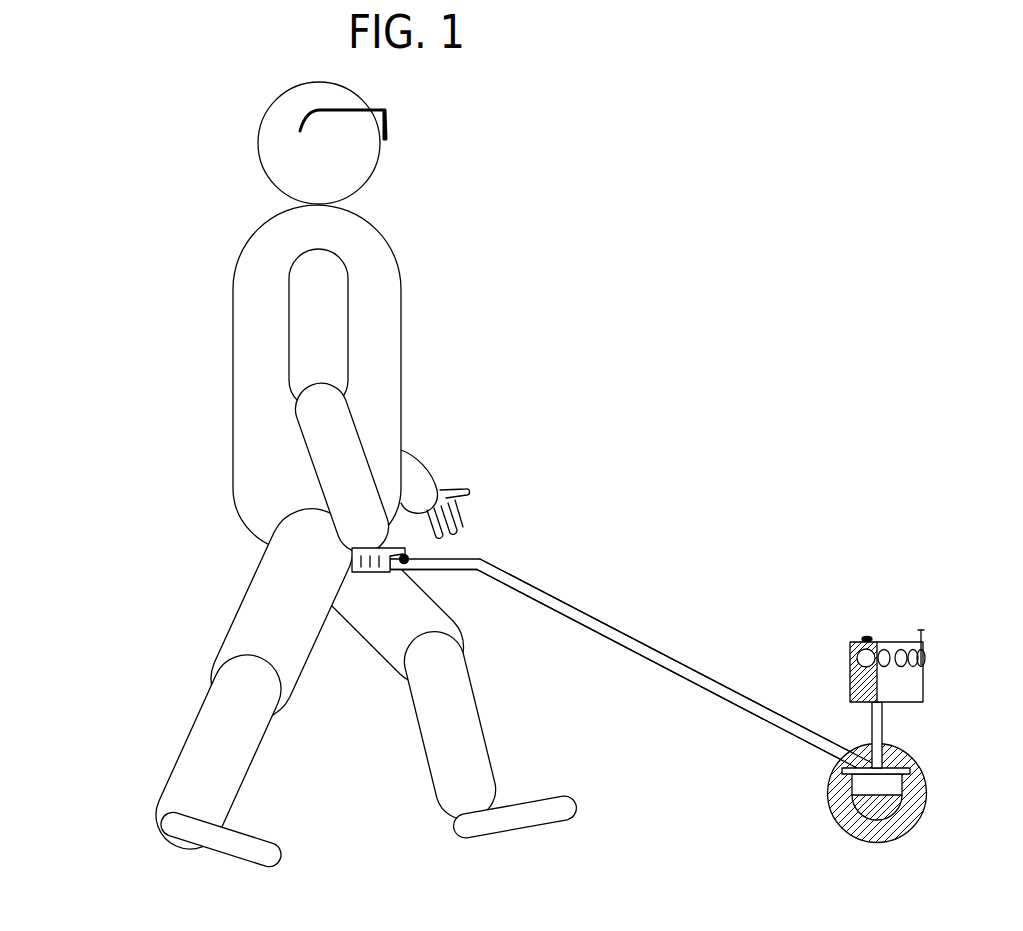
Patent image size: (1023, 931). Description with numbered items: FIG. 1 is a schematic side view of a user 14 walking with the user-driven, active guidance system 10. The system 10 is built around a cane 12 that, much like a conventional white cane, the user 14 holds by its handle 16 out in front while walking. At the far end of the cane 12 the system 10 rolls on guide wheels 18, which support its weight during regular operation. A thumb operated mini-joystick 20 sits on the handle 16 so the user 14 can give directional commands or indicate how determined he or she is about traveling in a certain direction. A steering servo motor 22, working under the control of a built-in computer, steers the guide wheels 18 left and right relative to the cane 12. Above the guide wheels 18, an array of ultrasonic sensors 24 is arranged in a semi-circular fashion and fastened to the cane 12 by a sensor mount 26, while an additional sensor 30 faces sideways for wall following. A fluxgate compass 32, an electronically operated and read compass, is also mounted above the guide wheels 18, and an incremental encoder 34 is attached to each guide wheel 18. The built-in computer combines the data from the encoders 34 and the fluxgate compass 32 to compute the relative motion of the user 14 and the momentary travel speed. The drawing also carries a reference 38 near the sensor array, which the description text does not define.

The user-driven, active guidance system 10 is at (724, 511).
The cane 12 is at (595, 620).
The user 14 is at (393, 340).
The handle 16 is at (458, 570).
The wheels 18 is at (920, 805).
The thumb operated mini-joystick 20 is at (408, 556).
The steering servo motor 22 is at (833, 791).
The ultrasonic sensors 24 is at (912, 646).
The sensor mount 26 is at (878, 722).
The sideways facing sensor 30 is at (858, 658).
The fluxgate compass 32 is at (867, 639).
The incremental encoder 34 is at (903, 785).
The antenna 38 is at (920, 633).